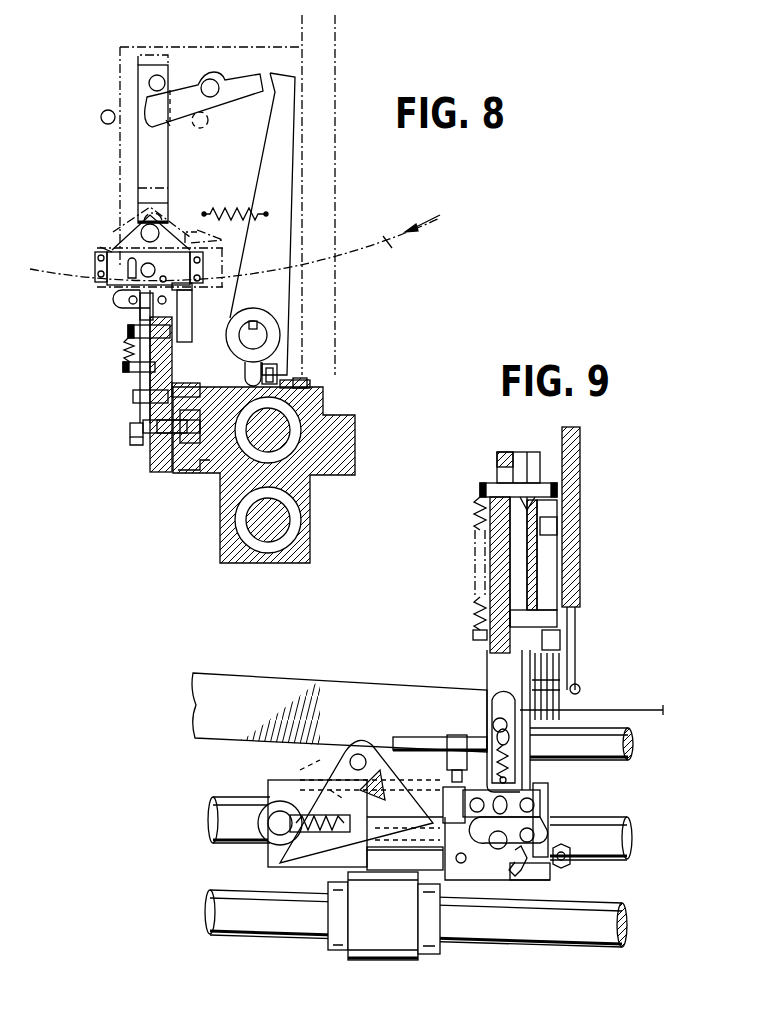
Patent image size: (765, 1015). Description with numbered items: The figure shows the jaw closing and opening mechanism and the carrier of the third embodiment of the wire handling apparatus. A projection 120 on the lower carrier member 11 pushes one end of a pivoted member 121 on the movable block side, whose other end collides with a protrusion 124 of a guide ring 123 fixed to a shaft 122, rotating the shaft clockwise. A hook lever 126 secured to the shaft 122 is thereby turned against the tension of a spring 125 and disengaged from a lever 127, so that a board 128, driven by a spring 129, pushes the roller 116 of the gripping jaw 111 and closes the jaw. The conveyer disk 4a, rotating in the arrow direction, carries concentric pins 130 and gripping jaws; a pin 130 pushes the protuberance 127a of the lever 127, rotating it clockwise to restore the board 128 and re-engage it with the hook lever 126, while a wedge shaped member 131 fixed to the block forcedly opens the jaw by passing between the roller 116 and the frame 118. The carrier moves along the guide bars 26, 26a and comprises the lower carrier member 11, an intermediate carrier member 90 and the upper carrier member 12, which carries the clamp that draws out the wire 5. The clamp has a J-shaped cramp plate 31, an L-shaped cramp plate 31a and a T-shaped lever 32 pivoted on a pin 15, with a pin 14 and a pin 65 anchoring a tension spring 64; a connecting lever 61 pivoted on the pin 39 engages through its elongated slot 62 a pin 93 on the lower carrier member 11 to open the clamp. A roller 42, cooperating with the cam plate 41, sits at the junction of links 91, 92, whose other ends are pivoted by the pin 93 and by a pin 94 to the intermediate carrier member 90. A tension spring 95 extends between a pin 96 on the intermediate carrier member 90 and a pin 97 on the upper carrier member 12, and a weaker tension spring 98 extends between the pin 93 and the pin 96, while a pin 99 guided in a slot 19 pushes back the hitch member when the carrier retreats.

In FIG. 8, the conveyer disk 4a is at (390, 247).
In FIG. 9, the conveyer disk 4a is at (580, 480).
In FIG. 9, the wire 5 is at (593, 696).
In FIG. 8, the lower carrier member 11 is at (308, 478).
In FIG. 9, the lower carrier member 11 is at (266, 855).
In FIG. 8, the upper carrier member 12 is at (160, 472).
In FIG. 9, the upper carrier member 12 is at (550, 872).
In FIG. 8, the pin 14 is at (128, 332).
In FIG. 8, the pin 15 is at (133, 396).
In FIG. 9, the slot 19 is at (552, 838).
In FIG. 8, the guide bar 26 is at (300, 433).
In FIG. 8, the second shaft bore 26a is at (298, 527).
In FIG. 8, the J-shaped cramp plate 31 is at (122, 298).
In FIG. 8, the L-shaped cramp plate 31a is at (140, 311).
In FIG. 8, the T-shaped lever 32 is at (130, 428).
In FIG. 8, the pin 39 is at (130, 440).
In FIG. 9, the cam plate 41 is at (394, 688).
In FIG. 9, the roller 42 is at (352, 752).
In FIG. 8, the connecting lever 61 is at (140, 433).
In FIG. 9, the connecting lever 61 is at (445, 795).
In FIG. 9, the elongated slot 62 is at (278, 845).
In FIG. 8, the tension spring 64 is at (124, 350).
In FIG. 8, the pin 65 is at (123, 367).
In FIG. 8, the intermediate carrier member 90 is at (196, 470).
In FIG. 9, the intermediate carrier member 90 is at (425, 862).
In FIG. 9, the link 91 is at (330, 778).
In FIG. 9, the link 92 is at (395, 748).
In FIG. 9, the pin 93 is at (275, 805).
In FIG. 9, the pin 94 is at (380, 855).
In FIG. 9, the tension spring 95 is at (463, 863).
In FIG. 9, the pin 96 is at (572, 862).
In FIG. 9, the pin 97 is at (460, 870).
In FIG. 9, the tension spring 98 is at (318, 833).
In FIG. 9, the pin 99 is at (548, 810).
In FIG. 8, the gripping jaw 111 is at (100, 248).
In FIG. 9, the gripping jaw 111 is at (572, 688).
In FIG. 8, the roller 116 is at (140, 230).
In FIG. 9, the roller 116 is at (560, 640).
In FIG. 8, the frame 118 is at (96, 264).
In FIG. 8, the projection 120 is at (310, 387).
In FIG. 8, the pivoted member 121 is at (308, 381).
In FIG. 8, the shaft 122 is at (278, 324).
In FIG. 9, the shaft 122 is at (608, 762).
In FIG. 8, the guide ring 123 is at (268, 336).
In FIG. 9, the guide ring 123 is at (457, 738).
In FIG. 8, the protrusion 124 is at (278, 372).
In FIG. 8, the spring 125 is at (235, 201).
In FIG. 8, the hook lever 126 is at (290, 205).
In FIG. 9, the hook lever 126 is at (540, 715).
In FIG. 8, the lever 127 is at (242, 72).
In FIG. 9, the lever 127 is at (540, 512).
In FIG. 8, the protuberance 127a is at (168, 124).
In FIG. 8, the board 128 is at (138, 155).
In FIG. 9, the board 128 is at (490, 542).
In FIG. 9, the spring 129 is at (474, 515).
In FIG. 8, the pin 130 is at (101, 113).
In FIG. 9, the pin 130 is at (557, 532).
In FIG. 8, the wedge shaped member 131 is at (202, 232).